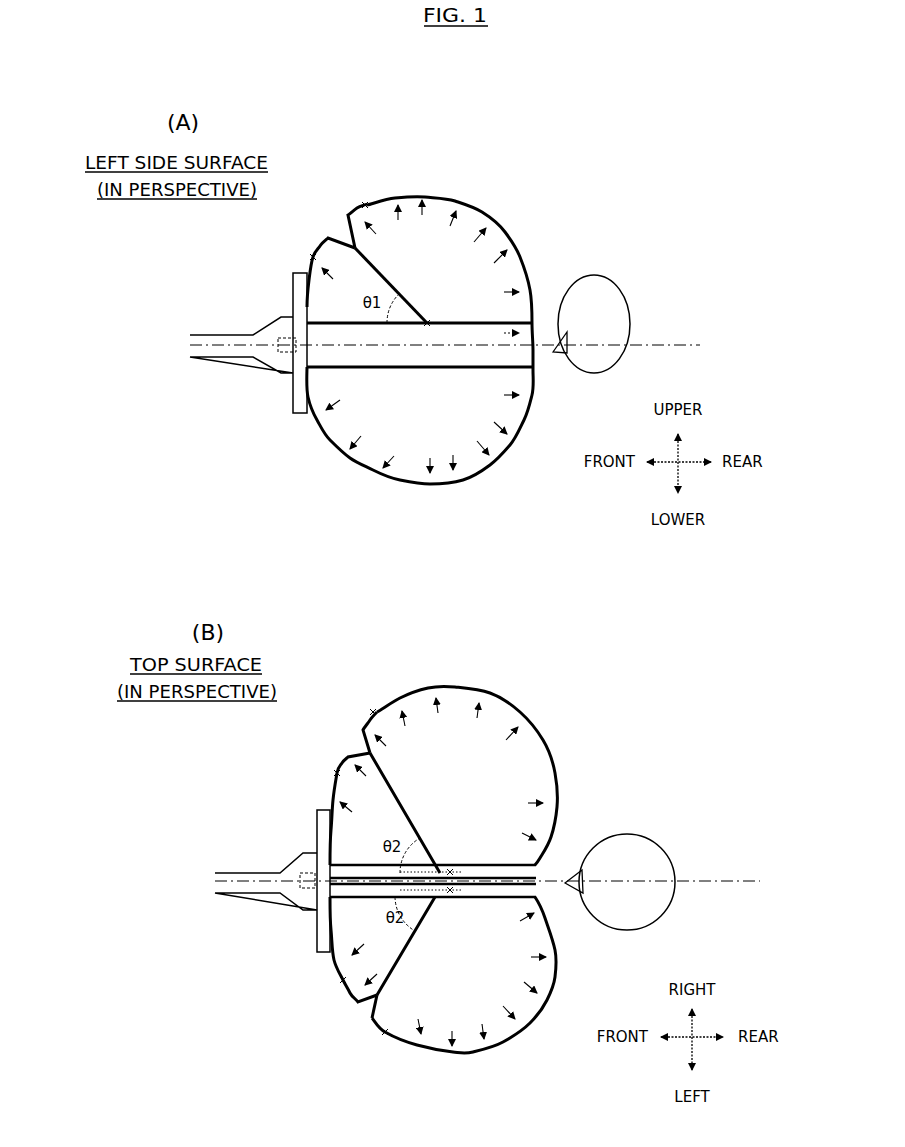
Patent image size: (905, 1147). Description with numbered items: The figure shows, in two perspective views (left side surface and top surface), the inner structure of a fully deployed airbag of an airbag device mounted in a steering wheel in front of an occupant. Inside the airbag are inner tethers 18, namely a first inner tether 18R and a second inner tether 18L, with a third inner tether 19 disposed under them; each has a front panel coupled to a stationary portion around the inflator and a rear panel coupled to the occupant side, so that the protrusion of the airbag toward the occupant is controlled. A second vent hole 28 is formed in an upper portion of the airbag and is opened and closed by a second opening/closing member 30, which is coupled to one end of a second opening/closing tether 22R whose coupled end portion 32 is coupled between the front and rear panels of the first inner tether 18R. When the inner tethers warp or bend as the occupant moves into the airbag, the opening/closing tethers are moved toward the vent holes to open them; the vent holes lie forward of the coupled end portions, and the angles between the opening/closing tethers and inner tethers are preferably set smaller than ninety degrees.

The inner tethers 18 is at (497, 323).
The first inner tether 18R is at (490, 867).
The second inner tether 18L is at (500, 900).
The third inner tether 19 is at (470, 367).
The second opening/closing tether 22R is at (407, 810).
The second vent hole 28 is at (347, 748).
The second opening/closing member 30 is at (363, 735).
The coupled end portion 32 is at (453, 863).